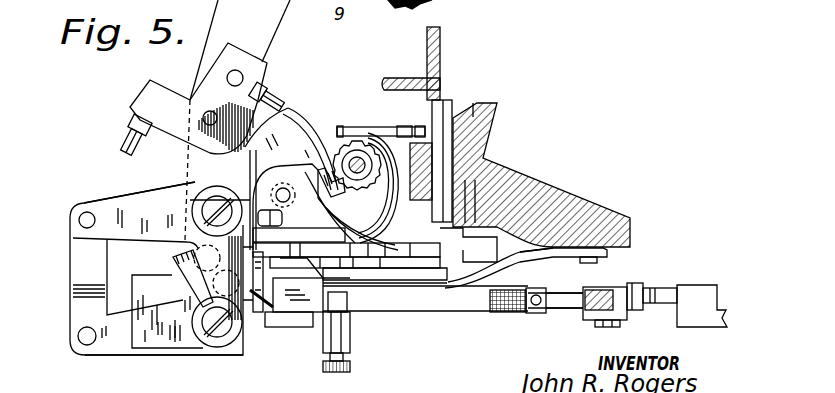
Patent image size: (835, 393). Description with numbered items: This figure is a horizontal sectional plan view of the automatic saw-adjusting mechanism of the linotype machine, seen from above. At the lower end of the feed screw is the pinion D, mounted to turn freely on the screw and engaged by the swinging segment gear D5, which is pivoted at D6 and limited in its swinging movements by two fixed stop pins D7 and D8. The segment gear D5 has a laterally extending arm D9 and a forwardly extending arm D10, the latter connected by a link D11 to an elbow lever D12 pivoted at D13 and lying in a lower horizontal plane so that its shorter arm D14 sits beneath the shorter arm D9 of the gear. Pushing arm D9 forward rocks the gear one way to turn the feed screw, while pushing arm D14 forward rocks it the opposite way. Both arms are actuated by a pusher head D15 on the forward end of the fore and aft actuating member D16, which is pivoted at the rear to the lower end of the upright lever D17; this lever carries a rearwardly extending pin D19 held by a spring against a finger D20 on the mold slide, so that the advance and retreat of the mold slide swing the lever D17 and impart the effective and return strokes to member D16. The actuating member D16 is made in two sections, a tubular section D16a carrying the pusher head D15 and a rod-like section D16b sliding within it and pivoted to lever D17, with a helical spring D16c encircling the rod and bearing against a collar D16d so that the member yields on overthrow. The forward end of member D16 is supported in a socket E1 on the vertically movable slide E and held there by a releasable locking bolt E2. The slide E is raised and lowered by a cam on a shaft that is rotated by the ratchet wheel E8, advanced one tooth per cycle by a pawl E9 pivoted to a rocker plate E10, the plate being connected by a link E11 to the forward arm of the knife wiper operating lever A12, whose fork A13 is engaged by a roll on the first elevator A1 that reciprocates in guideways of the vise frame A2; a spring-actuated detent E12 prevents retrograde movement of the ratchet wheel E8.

The fixed stop pin D7 is at (128, 148).
The fixed stop pin D8 is at (262, 92).
The link D11 is at (80, 260).
The forwardly extending arm D10 is at (117, 200).
The pivot D6 is at (203, 207).
The pivot D13 is at (219, 347).
The laterally extending arm D9 is at (228, 278).
The shorter arm D14 is at (190, 300).
The elbow lever D12 is at (135, 352).
The swinging segment gear D5 is at (308, 120).
The rocker plate E10 is at (292, 180).
The ratchet wheel E8 is at (318, 252).
The link E11 is at (323, 220).
The pinion D is at (339, 127).
The fork A13 is at (405, 127).
The first elevator A1 is at (420, 82).
The vise frame A2 is at (541, 175).
The operating lever A12 is at (490, 233).
The spring-actuated detent E12 is at (279, 258).
The pusher head D15 is at (260, 322).
The vertically movable slide E is at (350, 318).
The releasable locking bolt E2 is at (350, 343).
The socket E1 is at (348, 282).
The pawl E9 is at (393, 256).
The actuating member D16 is at (453, 298).
The tubular section D16a is at (480, 313).
The collar D16d is at (533, 317).
The helical spring D16c is at (517, 290).
The rod-like section D16b is at (577, 280).
The upright lever D17 is at (594, 313).
The rearwardly extending pin D19 is at (667, 268).
The finger D20 is at (720, 274).